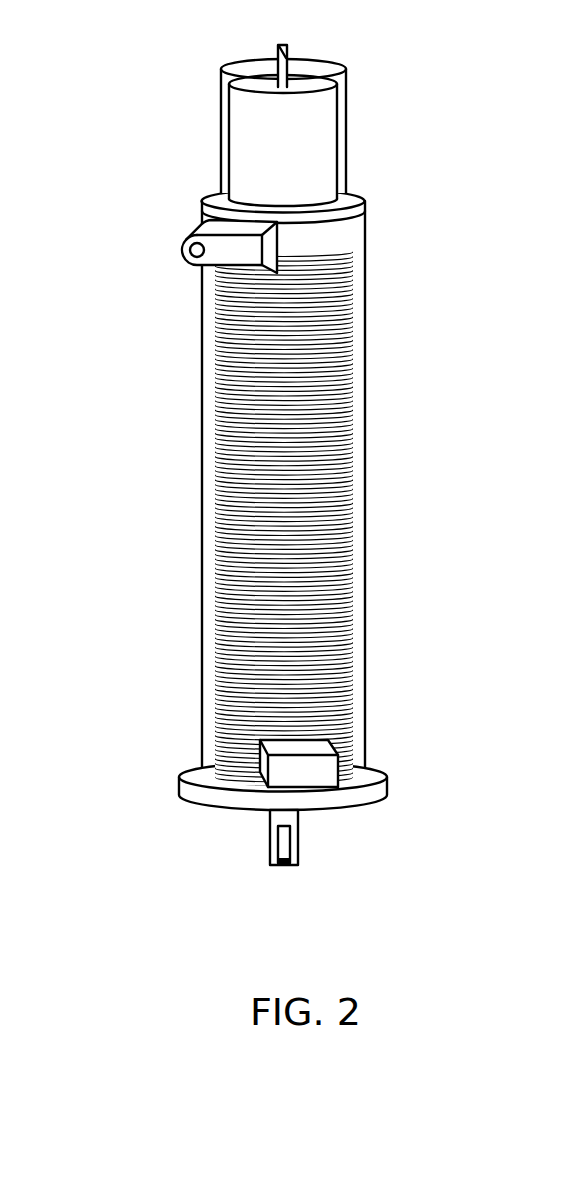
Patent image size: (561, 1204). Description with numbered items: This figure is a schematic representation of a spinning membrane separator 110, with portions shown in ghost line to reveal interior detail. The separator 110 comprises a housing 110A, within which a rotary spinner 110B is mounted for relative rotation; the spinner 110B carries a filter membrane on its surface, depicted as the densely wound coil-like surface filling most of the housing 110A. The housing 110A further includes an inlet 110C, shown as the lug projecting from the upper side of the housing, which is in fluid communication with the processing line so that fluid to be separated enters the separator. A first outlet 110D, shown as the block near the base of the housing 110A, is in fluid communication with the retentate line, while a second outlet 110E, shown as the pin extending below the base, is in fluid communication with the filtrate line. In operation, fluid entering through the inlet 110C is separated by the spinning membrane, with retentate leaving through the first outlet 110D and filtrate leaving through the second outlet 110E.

The spinning membrane separator 110 is at (272, 455).
The housing 110A is at (203, 662).
The rotary spinner 110B is at (214, 507).
The inlet 110C is at (185, 254).
The first outlet 110D is at (313, 764).
The second outlet 110E is at (294, 843).